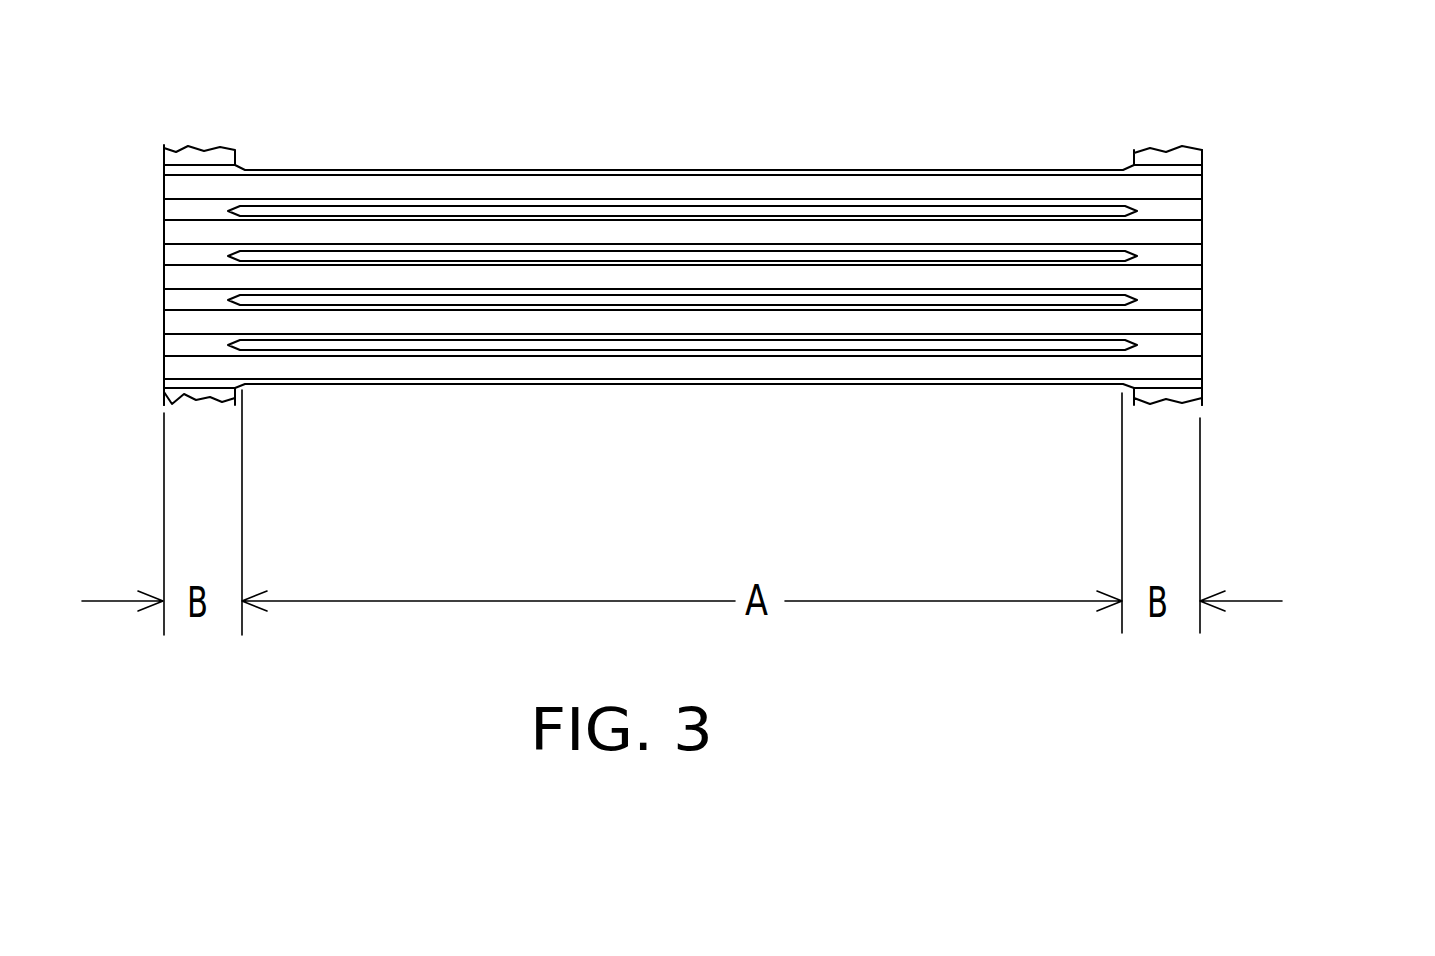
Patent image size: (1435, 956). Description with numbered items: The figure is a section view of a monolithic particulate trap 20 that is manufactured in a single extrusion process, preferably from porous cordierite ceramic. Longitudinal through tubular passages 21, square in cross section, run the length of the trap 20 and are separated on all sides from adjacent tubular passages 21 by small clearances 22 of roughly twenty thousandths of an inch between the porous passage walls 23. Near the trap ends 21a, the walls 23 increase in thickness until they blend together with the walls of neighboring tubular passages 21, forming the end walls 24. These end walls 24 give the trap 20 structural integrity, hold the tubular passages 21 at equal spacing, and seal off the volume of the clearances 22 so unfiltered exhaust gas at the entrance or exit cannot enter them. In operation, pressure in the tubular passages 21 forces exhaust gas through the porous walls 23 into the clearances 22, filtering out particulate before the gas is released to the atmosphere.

The monolithic particulate trap 20 is at (784, 265).
The tubular passages 21 is at (827, 185).
The trap ends 21a is at (1128, 165).
The clearances 22 is at (745, 337).
The porous passage walls 23 is at (840, 353).
The end walls 24 is at (1203, 210).